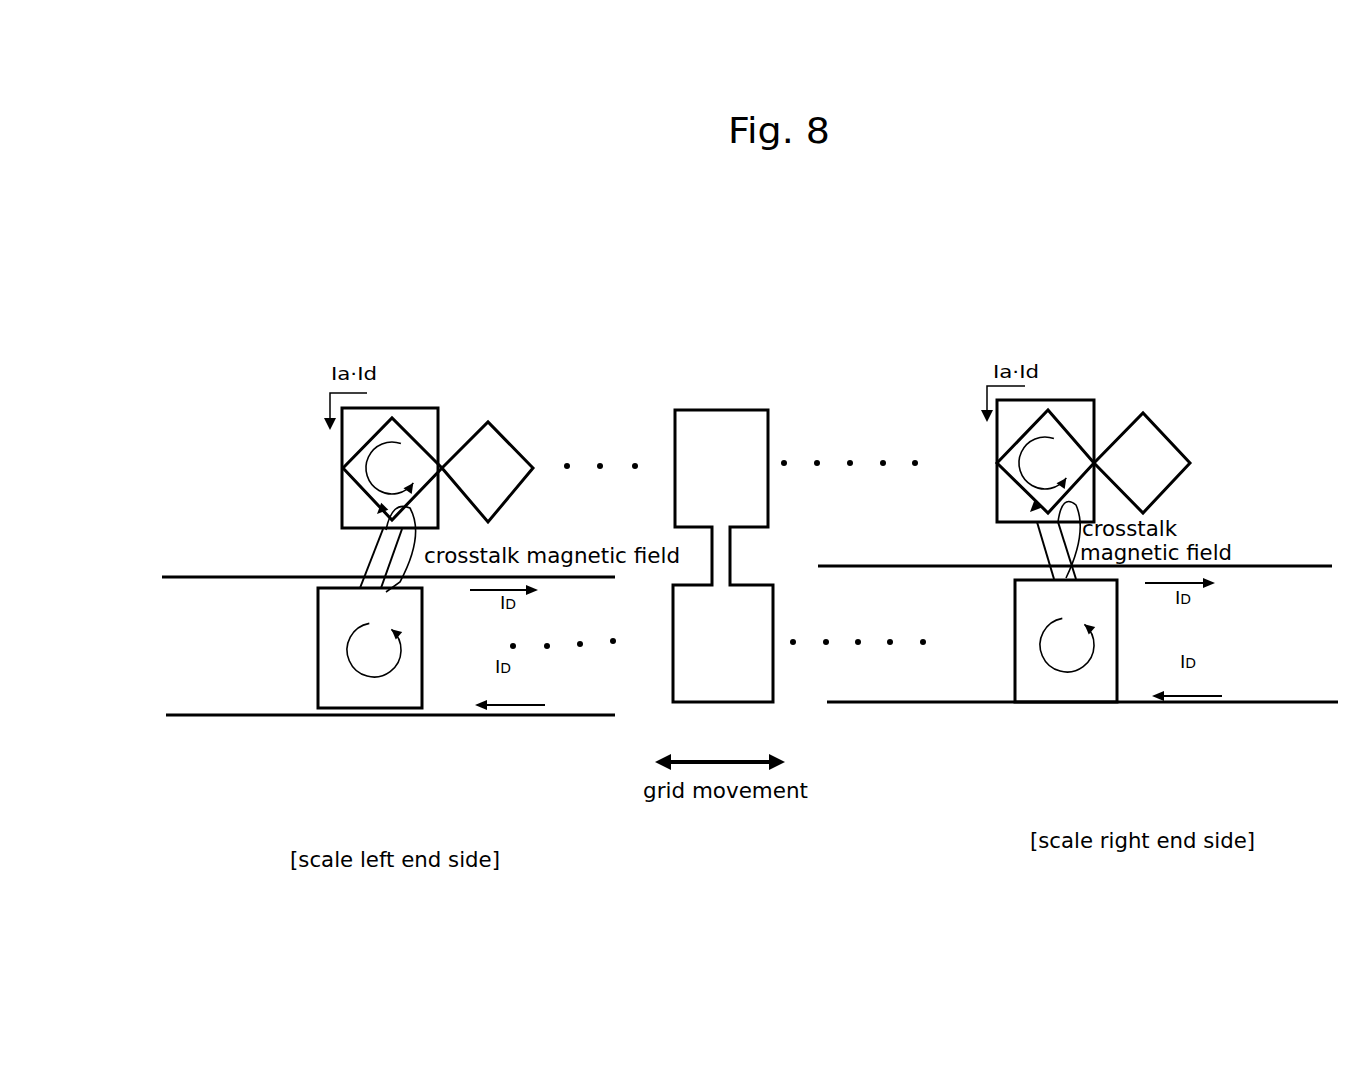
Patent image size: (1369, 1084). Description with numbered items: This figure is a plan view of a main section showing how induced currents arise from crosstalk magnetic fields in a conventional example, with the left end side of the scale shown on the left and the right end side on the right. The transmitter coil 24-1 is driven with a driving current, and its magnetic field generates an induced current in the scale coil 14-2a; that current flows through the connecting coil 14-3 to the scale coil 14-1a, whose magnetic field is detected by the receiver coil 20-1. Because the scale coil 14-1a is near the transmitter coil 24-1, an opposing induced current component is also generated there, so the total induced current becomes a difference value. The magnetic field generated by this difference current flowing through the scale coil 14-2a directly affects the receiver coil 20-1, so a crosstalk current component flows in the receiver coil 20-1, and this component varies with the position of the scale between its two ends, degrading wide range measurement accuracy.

The scale coil 14-1a is at (400, 407).
The receiver coil 20-1 is at (513, 453).
The transmitter coil 24-1 is at (183, 715).
The connecting coil 14-3 is at (373, 556).
The scale coil 14-2a is at (318, 667).